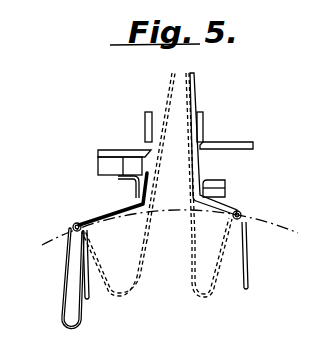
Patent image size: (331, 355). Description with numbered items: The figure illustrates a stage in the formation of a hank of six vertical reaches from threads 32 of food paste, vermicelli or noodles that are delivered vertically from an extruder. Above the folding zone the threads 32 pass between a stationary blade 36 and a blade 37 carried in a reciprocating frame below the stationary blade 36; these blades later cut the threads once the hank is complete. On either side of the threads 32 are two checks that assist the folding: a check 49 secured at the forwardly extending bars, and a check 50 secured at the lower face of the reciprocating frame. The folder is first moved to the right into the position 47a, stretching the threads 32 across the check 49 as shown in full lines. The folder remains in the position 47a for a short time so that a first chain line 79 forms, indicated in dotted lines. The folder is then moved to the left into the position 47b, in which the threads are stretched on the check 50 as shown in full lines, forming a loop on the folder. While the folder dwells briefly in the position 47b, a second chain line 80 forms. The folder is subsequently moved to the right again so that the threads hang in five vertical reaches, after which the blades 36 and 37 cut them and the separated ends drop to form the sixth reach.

The threads 32 is at (193, 86).
The stationary blade 36 is at (218, 143).
The blade 37 is at (100, 156).
The folder position 47a is at (240, 213).
The folder position 47b is at (75, 224).
The check 49 is at (222, 192).
The check 50 is at (139, 195).
The chain line 79 is at (205, 297).
The chain line 80 is at (118, 297).